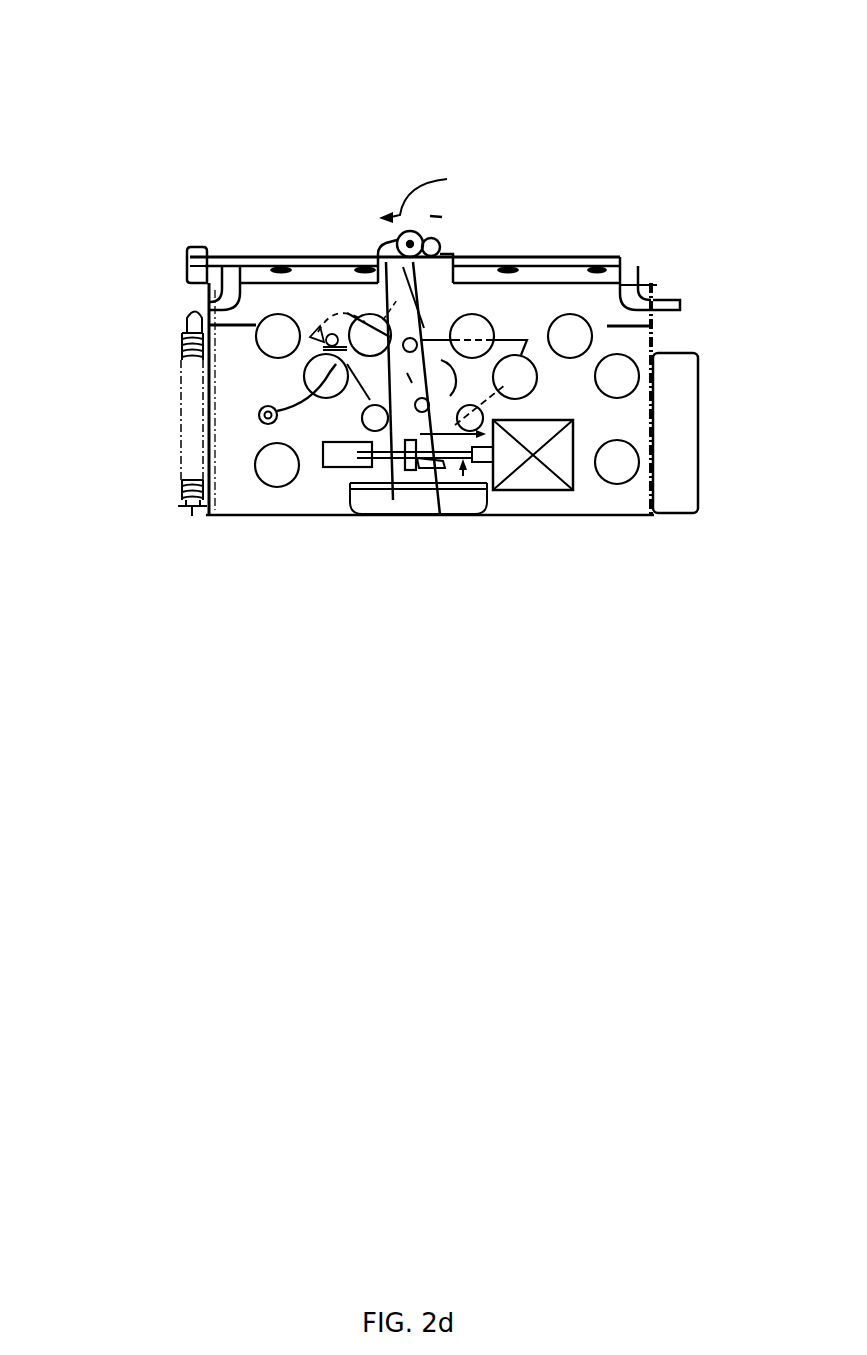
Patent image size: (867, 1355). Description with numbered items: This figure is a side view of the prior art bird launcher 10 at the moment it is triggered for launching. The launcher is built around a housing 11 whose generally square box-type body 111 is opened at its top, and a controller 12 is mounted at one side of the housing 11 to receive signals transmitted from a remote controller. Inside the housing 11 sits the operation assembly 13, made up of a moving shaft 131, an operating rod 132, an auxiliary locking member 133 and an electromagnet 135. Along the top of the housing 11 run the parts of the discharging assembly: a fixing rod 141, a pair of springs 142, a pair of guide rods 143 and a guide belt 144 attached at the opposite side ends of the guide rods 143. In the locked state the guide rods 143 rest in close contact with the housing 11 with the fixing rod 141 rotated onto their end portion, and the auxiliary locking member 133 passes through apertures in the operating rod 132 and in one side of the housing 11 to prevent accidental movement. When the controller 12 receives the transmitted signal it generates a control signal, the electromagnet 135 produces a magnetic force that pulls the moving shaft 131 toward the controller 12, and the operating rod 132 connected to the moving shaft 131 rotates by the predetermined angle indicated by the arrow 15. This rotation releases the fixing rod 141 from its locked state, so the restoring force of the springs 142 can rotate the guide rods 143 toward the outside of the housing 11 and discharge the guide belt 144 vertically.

The bird launcher 10 is at (390, 145).
The housing 11 is at (300, 527).
The body 111 is at (235, 498).
The controller 12 is at (672, 490).
The operation assembly 13 is at (470, 490).
The moving shaft 131 is at (434, 500).
The operating rod 132 is at (392, 500).
The auxiliary locking member 133 is at (259, 414).
The electromagnet 135 is at (554, 491).
The fixing rod 141 is at (323, 250).
The springs 142 is at (182, 341).
The guide rods 143 is at (238, 249).
The guide belt 144 is at (517, 249).
The rotation of operating rod 15 is at (434, 196).